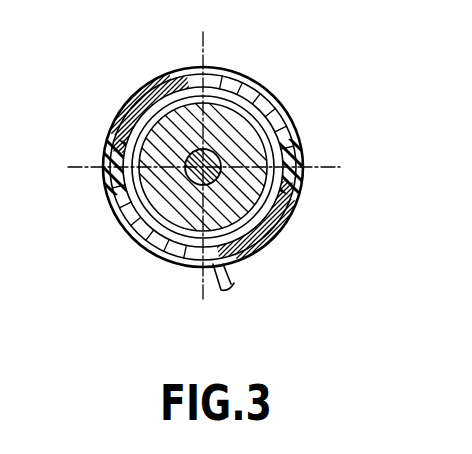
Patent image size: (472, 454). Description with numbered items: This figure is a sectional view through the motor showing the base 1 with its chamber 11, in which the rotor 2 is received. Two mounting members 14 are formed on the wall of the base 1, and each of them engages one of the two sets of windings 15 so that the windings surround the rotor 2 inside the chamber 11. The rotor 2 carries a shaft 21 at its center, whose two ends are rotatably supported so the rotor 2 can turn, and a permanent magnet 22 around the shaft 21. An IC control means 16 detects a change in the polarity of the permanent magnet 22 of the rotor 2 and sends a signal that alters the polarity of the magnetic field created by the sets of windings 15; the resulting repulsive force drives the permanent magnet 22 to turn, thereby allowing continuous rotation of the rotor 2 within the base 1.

The base 1 is at (215, 72).
The rotor 2 is at (156, 240).
The chamber 11 is at (184, 72).
The mounting member 14 is at (105, 148).
The set of windings 15 is at (123, 105).
The IC control means 16 is at (192, 255).
The shaft 21 is at (260, 227).
The permanent magnet 22 is at (253, 182).